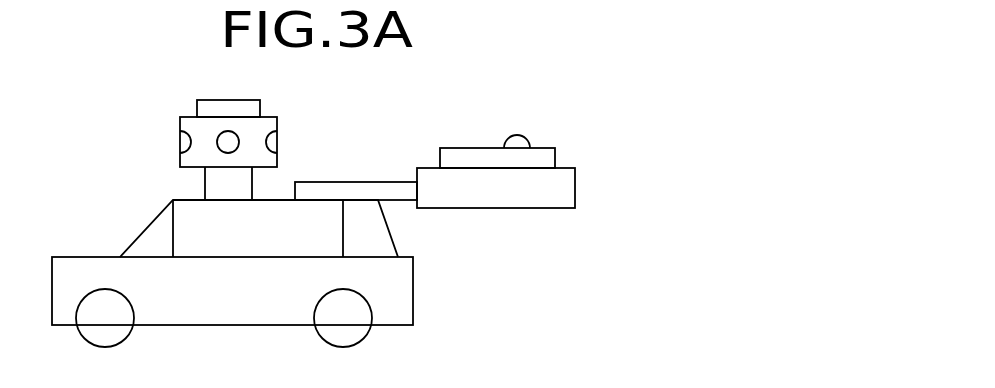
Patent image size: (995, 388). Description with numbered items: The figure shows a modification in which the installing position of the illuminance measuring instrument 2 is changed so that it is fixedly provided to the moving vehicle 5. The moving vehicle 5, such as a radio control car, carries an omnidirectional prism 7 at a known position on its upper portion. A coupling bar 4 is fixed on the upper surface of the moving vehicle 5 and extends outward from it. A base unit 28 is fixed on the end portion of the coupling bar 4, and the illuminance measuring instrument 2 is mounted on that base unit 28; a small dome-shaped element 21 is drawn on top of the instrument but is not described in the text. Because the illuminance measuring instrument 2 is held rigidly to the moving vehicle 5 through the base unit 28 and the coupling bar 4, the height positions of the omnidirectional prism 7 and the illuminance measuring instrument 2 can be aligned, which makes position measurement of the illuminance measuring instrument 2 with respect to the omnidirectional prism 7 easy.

The moving vehicle 5 is at (78, 256).
The omnidirectional prism 7 is at (180, 122).
The coupling bar 4 is at (357, 180).
The illuminance measuring instrument 2 is at (472, 148).
The sensor dome 21 is at (528, 142).
The base unit 28 is at (577, 178).